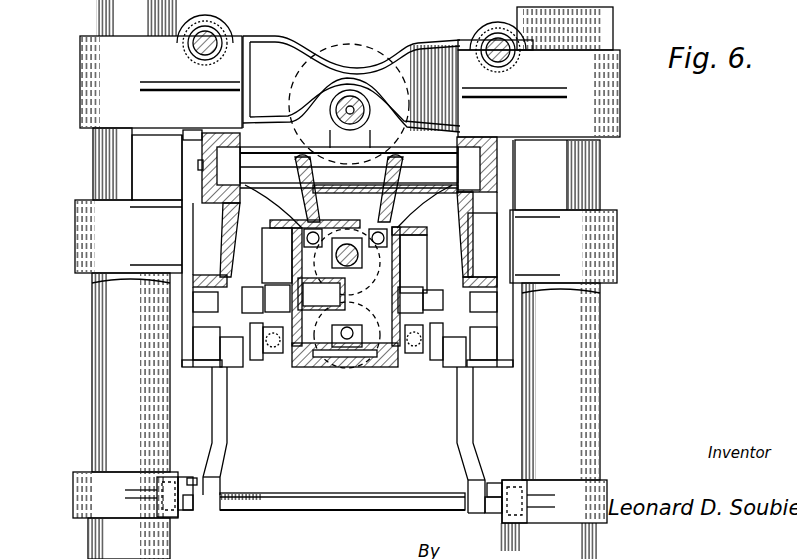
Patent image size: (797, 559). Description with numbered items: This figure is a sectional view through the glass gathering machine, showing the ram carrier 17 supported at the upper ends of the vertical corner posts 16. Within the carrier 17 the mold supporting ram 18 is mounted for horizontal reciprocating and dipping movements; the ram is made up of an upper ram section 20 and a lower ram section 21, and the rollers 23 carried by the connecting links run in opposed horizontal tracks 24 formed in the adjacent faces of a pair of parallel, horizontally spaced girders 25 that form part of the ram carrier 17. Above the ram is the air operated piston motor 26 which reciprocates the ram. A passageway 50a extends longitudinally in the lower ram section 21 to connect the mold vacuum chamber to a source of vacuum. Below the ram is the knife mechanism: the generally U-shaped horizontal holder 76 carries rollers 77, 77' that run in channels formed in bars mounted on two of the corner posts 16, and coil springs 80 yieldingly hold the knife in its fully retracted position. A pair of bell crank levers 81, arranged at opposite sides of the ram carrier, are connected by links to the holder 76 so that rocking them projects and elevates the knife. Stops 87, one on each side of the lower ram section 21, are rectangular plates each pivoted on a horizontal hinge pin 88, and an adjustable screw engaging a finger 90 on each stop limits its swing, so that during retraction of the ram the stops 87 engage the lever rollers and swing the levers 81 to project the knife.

The corner posts 16 is at (100, 388).
The ram carrier 17 is at (488, 256).
The mold supporting ram 18 is at (457, 270).
The upper ram section 20 is at (265, 193).
The lower ram section 21 is at (392, 368).
The rollers 23 is at (227, 128).
The tracks 24 is at (493, 175).
The girders 25 is at (503, 212).
The piston motor 26 is at (370, 48).
The passageway 50a is at (321, 294).
The holder 76 is at (298, 490).
The rollers 77 is at (164, 508).
The bracket 77' is at (514, 510).
The coil springs 80 is at (188, 478).
The bell crank levers 81 is at (223, 438).
The stops 87 is at (443, 322).
The hinge pin 88 is at (443, 300).
The finger 90 is at (270, 358).